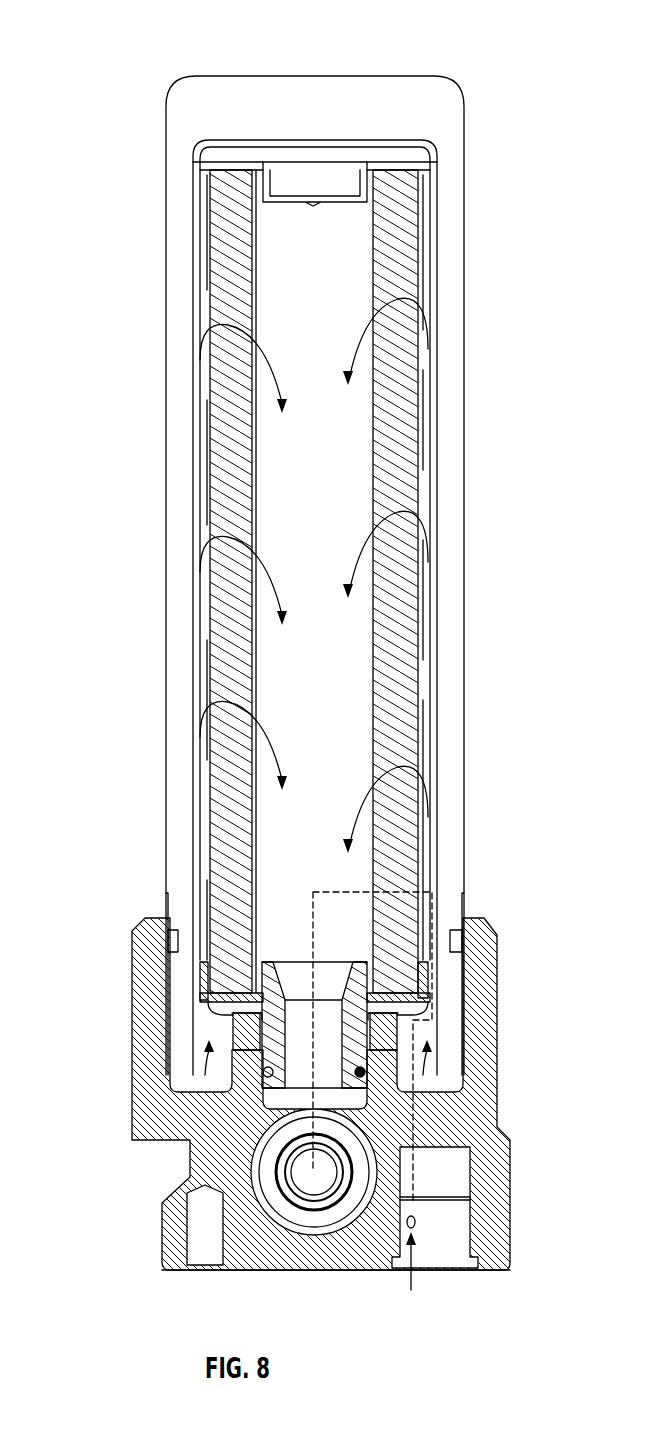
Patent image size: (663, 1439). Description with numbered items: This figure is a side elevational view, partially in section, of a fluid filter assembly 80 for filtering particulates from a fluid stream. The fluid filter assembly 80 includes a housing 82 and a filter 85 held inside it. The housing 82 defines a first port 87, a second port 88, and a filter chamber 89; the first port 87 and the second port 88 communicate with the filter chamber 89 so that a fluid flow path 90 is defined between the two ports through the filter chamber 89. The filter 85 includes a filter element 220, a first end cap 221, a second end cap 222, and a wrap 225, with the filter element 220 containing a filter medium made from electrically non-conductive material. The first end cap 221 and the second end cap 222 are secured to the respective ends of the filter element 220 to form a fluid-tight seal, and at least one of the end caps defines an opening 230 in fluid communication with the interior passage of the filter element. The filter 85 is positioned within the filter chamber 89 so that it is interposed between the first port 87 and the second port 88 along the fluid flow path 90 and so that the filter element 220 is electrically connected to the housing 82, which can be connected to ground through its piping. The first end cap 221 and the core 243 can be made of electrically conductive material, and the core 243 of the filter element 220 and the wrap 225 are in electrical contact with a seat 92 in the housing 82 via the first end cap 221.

The fluid filter assembly 80 is at (135, 76).
The housing 82 is at (181, 279).
The filter 85 is at (202, 508).
The first port 87 is at (455, 1258).
The second port 88 is at (315, 1236).
The filter chamber 89 is at (196, 697).
The fluid flow path 90 is at (313, 903).
The seat 92 is at (218, 1074).
The filter element 220 is at (400, 272).
The first end cap 221 is at (208, 1013).
The second end cap 222 is at (355, 185).
The wrap 225 is at (420, 685).
The opening 230 is at (293, 1088).
The core 243 is at (365, 462).